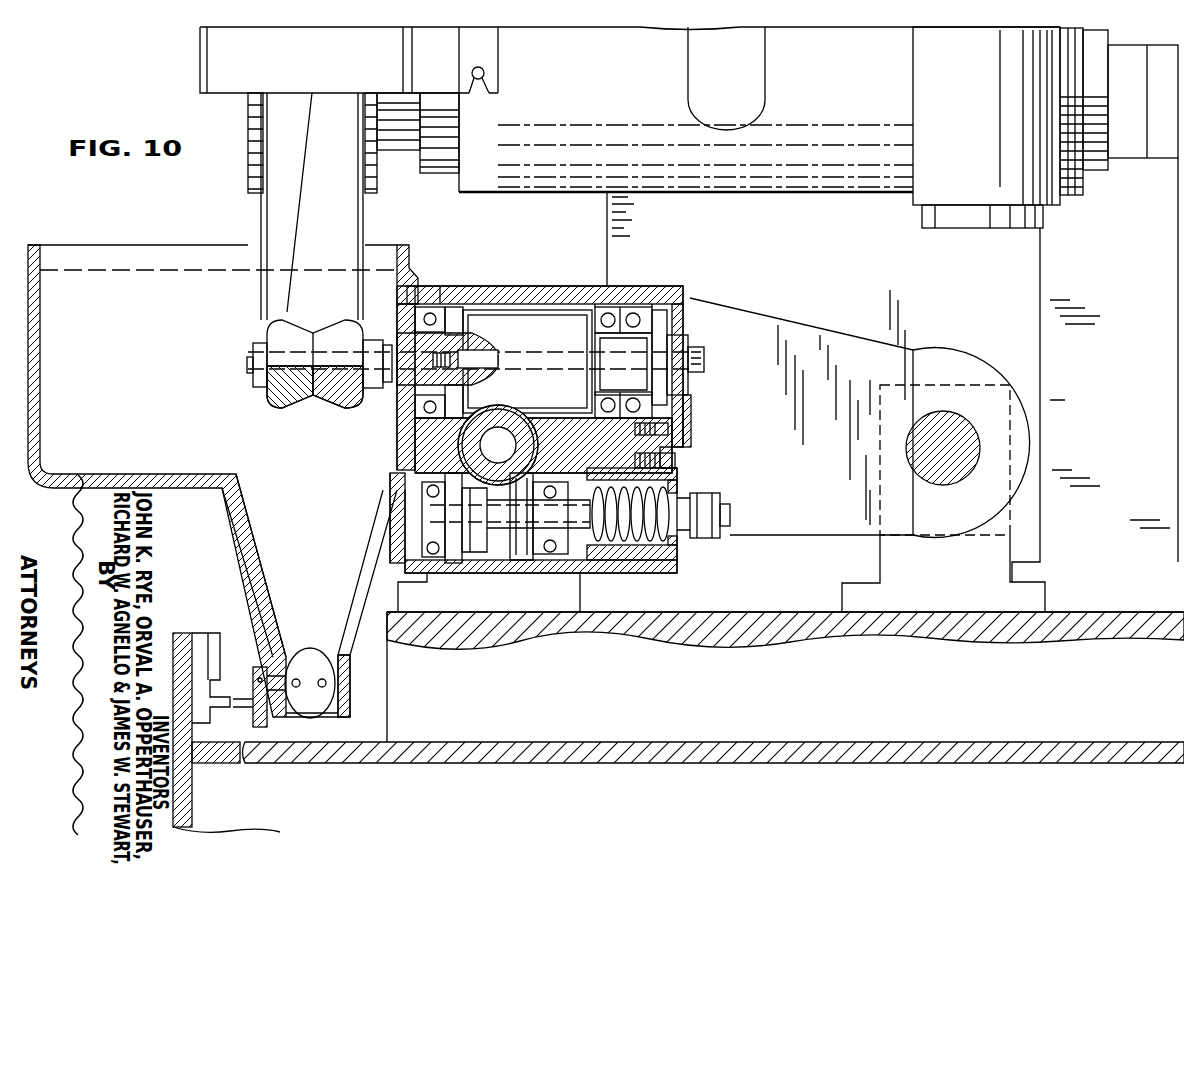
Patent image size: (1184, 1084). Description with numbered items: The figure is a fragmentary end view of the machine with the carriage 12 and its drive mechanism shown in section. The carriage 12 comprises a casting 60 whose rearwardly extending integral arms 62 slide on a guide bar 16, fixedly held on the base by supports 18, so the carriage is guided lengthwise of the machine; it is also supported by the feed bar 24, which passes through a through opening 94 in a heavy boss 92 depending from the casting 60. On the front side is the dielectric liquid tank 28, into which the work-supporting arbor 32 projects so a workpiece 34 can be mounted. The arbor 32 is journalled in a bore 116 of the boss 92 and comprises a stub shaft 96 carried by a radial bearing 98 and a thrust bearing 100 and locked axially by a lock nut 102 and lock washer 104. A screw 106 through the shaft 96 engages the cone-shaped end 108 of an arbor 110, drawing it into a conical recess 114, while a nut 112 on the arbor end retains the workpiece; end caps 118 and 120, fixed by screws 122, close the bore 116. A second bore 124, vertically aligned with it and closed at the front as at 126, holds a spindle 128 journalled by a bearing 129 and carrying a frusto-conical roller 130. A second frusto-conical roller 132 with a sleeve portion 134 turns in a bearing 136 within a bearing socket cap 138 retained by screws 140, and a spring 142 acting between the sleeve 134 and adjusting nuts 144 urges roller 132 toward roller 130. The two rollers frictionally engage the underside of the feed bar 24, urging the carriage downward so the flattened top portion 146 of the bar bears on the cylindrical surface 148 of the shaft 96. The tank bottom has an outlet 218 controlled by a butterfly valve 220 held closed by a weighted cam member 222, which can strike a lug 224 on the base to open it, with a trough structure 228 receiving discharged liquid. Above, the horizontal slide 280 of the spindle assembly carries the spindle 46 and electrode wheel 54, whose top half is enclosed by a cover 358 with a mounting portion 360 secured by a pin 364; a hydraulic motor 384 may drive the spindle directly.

The carriage 12 is at (741, 313).
The guide bar 16 is at (975, 432).
The supports 18 is at (1030, 600).
The feed bar 24 is at (537, 432).
The dielectric liquid tank 28 is at (88, 241).
The work-supporting arbor 32 is at (380, 392).
The workpiece 34 is at (280, 408).
The spindle 46 is at (395, 150).
The electrode wheel 54 is at (276, 215).
The carriage casting 60 is at (643, 300).
The integral arms 62 is at (845, 343).
The boss 92 is at (397, 470).
The through opening 94 is at (535, 447).
The stub shaft 96 is at (568, 298).
The radial bearing 98 is at (438, 295).
The thrust bearing 100 is at (612, 303).
The lock nut 102 is at (688, 305).
The lock washer 104 is at (660, 303).
The screw 106 is at (705, 357).
The cone-shaped end 108 is at (423, 355).
The arbor 110 is at (372, 396).
The nut 112 is at (256, 372).
The conical recess 114 is at (456, 373).
The bore 116 is at (528, 298).
The end cap 118 is at (410, 292).
The end cap 120 is at (691, 412).
The screws 122 is at (397, 437).
The second bore 124 is at (543, 445).
The closed end 126 is at (390, 522).
The spindle 128 is at (735, 511).
The bearing 129 is at (432, 476).
The frusto-conical roller 130 is at (475, 560).
The second frusto-conical roller 132 is at (520, 562).
The sleeve portion 134 is at (600, 556).
The bearing 136 is at (553, 557).
The bearing socket cap 138 is at (676, 566).
The screws 140 is at (690, 460).
The spring 142 is at (668, 538).
The adjusting nuts 144 is at (710, 495).
The flattened top portion 146 is at (476, 398).
The cylindrical surface 148 is at (560, 349).
The outlet 218 is at (249, 583).
The butterfly valve 220 is at (330, 712).
The weighted cam member 222 is at (270, 722).
The lug 224 is at (233, 668).
The trough structure 228 is at (520, 742).
The horizontal slide 280 is at (845, 192).
The cover 358 is at (219, 63).
The mounting portion 360 is at (499, 53).
The pin 364 is at (479, 80).
The hydraulic motor 384 is at (955, 200).